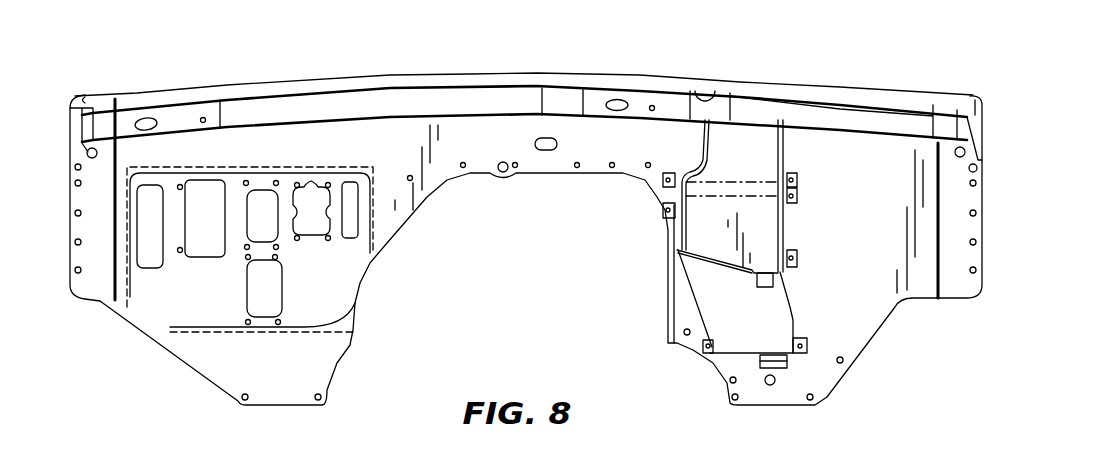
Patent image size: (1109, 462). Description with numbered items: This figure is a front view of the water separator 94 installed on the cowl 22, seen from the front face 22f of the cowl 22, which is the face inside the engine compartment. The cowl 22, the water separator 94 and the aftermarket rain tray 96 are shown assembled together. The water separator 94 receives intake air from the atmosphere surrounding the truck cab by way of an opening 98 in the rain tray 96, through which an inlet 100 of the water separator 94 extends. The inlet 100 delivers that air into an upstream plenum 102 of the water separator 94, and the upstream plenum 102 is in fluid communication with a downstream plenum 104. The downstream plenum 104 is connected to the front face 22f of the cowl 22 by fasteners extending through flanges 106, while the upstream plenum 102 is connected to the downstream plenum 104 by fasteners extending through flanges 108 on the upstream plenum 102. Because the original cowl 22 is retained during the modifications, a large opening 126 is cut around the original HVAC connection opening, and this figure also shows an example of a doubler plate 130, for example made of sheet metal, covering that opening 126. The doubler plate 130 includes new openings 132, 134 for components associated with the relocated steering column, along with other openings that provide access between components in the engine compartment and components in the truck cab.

The cowl 22 is at (395, 200).
The front face 22f is at (853, 275).
The water separator 94 is at (630, 193).
The aftermarket rain tray 96 is at (380, 82).
The opening 98 is at (705, 98).
The inlet 100 is at (745, 93).
The upstream plenum 102 is at (750, 143).
The downstream plenum 104 is at (725, 298).
The flanges 106 is at (670, 175).
The flanges 108 is at (797, 196).
The opening 126 is at (307, 327).
The doubler plate 130 is at (128, 167).
The opening 132 is at (265, 190).
The opening 134 is at (283, 285).